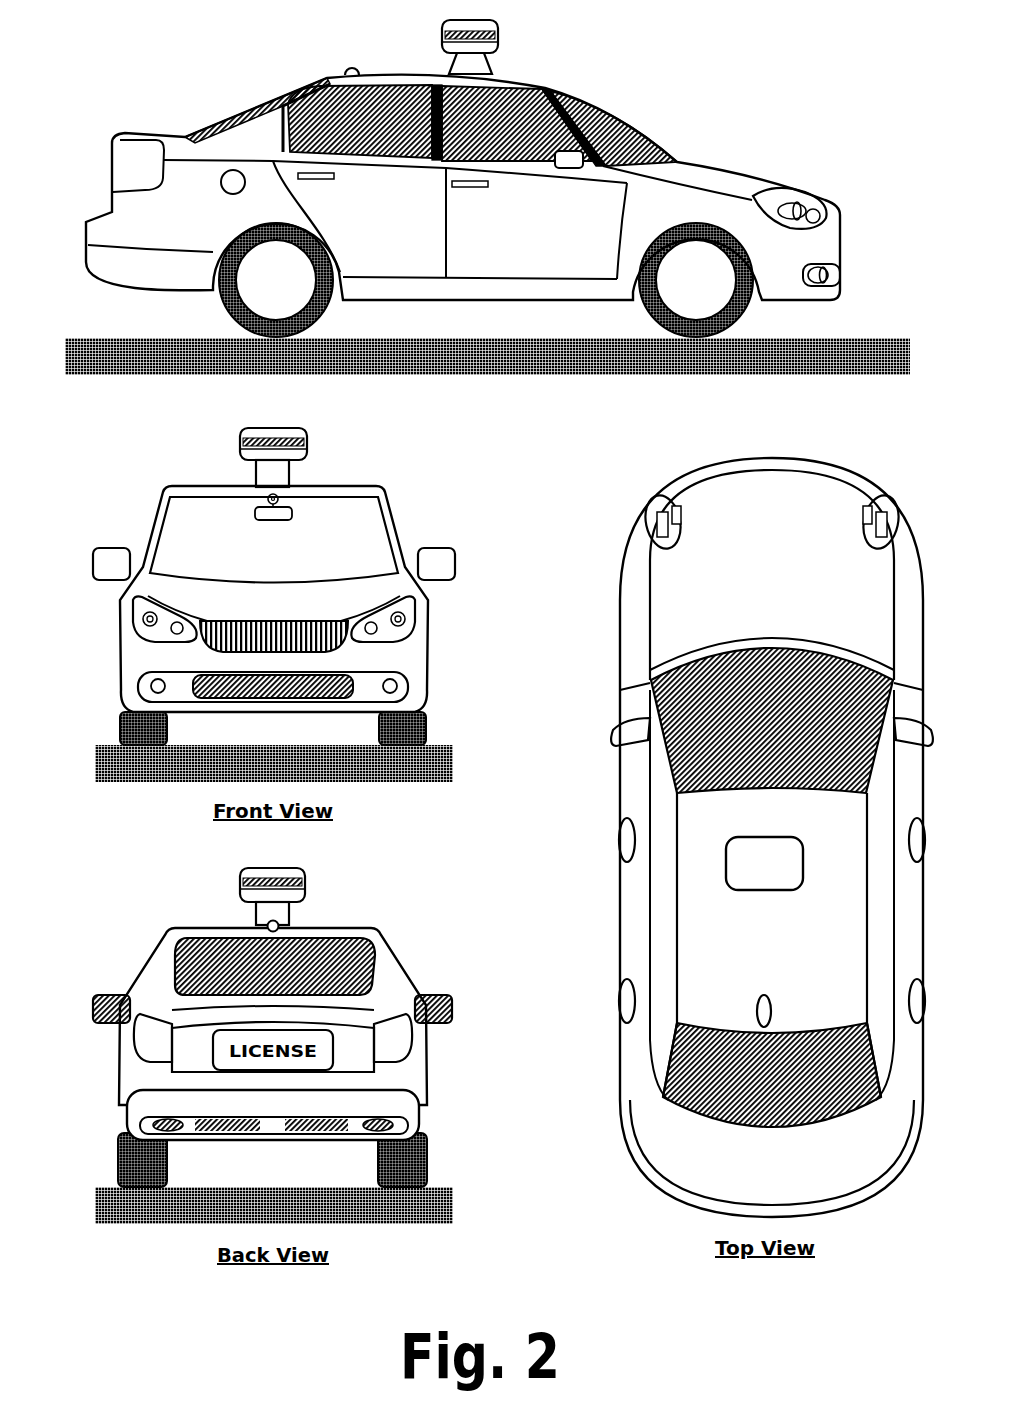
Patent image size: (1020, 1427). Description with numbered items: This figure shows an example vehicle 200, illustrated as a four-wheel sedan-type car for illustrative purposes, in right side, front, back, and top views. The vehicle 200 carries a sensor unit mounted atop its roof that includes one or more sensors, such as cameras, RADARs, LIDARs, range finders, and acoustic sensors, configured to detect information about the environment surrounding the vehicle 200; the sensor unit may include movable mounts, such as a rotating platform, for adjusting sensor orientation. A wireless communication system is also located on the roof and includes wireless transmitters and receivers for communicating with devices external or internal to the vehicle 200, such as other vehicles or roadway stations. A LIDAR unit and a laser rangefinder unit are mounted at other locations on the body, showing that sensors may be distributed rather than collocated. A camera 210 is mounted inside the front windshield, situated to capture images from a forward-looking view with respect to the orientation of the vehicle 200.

The vehicle 200 is at (78, 128).
The camera 210 is at (282, 500).